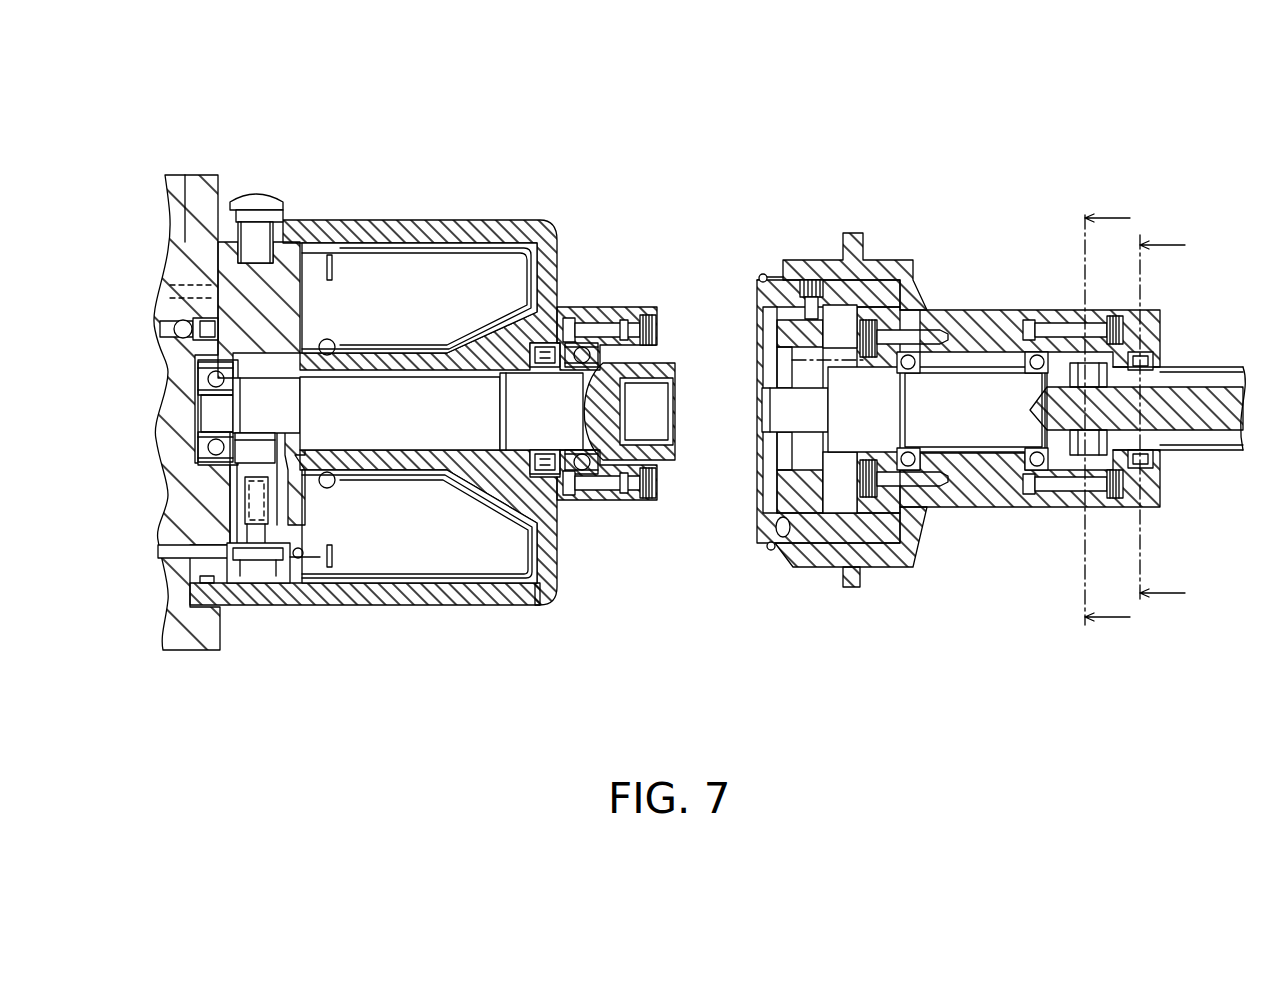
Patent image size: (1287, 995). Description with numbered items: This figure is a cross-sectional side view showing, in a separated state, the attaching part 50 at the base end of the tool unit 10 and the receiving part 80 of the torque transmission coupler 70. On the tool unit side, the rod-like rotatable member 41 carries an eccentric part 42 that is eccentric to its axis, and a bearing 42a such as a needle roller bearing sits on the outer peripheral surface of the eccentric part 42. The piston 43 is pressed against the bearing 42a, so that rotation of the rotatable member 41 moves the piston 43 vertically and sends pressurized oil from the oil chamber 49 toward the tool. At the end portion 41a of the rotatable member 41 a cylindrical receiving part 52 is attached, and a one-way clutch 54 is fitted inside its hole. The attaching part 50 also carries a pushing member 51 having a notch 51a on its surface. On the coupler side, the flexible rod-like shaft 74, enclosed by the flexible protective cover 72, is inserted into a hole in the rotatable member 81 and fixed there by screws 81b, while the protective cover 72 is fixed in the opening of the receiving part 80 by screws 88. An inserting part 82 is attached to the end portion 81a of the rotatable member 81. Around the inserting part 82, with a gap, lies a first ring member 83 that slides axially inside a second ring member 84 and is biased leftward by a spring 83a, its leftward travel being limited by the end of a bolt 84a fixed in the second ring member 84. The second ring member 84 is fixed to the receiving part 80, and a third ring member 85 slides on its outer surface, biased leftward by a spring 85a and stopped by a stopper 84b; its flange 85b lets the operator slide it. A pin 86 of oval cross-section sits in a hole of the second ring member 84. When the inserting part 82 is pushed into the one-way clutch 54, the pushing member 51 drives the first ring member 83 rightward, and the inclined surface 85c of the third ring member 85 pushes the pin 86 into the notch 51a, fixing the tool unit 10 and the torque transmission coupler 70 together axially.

The tool unit 10 is at (565, 146).
The rotatable member 41 is at (438, 428).
The end portion of the rotatable member 41a is at (520, 434).
The eccentric part 42 is at (288, 410).
The bearing 42a is at (262, 350).
The piston 43 is at (273, 498).
The oil chamber 49 is at (413, 314).
The attaching part 50 is at (600, 312).
The pushing member 51 is at (650, 313).
The notch 51a is at (624, 317).
The receiving part 52 is at (662, 462).
The one-way clutch 54 is at (640, 424).
The torque transmission coupler 70 is at (1048, 204).
The protective cover 72 is at (1207, 450).
The rod-like shaft 74 is at (1205, 400).
The receiving part 80 is at (1010, 508).
The rotatable member 81 is at (973, 390).
The end portion of the rotatable member 81a is at (875, 414).
The screws 81b is at (1058, 350).
The inserting part 82 is at (757, 410).
The first ring member 83 is at (810, 505).
The spring 83a is at (842, 465).
The second ring member 84 is at (838, 287).
The bolt 84a is at (806, 283).
The stopper 84b is at (762, 277).
The third ring member 85 is at (915, 268).
The spring 85a is at (875, 270).
The flange 85b is at (851, 240).
The inclined surface 85c is at (772, 272).
The pin 86 is at (771, 549).
The screws 88 is at (1132, 322).